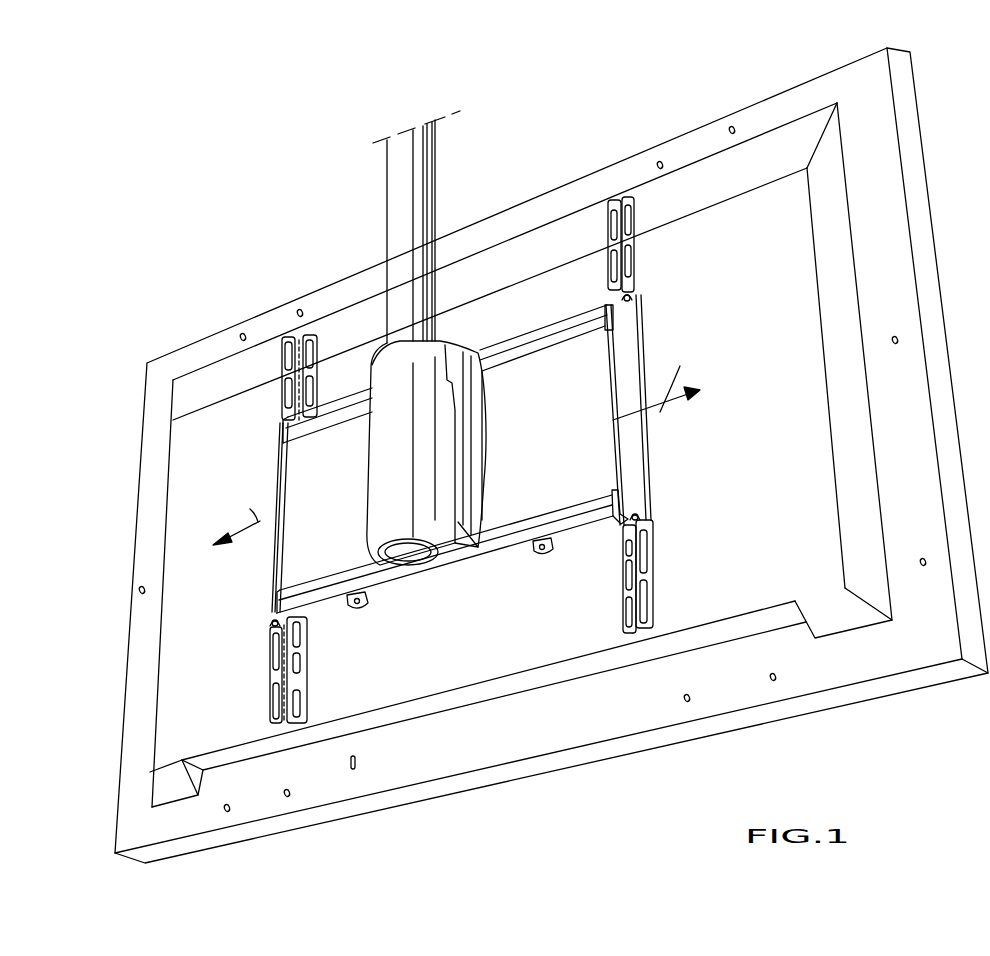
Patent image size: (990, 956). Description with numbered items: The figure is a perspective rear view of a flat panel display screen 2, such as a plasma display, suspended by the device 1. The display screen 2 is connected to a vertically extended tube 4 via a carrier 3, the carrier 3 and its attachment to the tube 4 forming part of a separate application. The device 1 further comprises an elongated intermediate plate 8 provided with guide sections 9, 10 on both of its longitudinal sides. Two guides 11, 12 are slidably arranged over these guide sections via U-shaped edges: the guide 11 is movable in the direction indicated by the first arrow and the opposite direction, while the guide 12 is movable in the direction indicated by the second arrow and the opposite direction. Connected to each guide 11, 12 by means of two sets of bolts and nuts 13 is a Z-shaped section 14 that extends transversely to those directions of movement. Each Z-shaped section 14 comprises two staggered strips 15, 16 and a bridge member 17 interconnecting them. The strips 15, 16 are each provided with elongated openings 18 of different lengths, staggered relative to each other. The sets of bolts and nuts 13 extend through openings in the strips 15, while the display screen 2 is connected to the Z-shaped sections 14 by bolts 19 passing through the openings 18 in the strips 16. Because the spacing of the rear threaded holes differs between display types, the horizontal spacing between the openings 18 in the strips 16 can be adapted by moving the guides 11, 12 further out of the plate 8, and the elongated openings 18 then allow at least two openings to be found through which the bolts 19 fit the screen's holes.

The device 1 is at (266, 229).
The flat panel display screen 2 is at (197, 383).
The carrier 3 is at (468, 400).
The vertically extended tube 4 is at (417, 170).
The elongated intermediate plate 8 is at (548, 378).
The guide section 9 is at (606, 306).
The guide section 10 is at (610, 523).
The guide 11 is at (628, 442).
The guide 12 is at (273, 603).
The sets of bolts and nuts 13 is at (272, 624).
The Z-shaped section 14 is at (272, 678).
The strip 15 is at (280, 380).
The strip 16 is at (318, 350).
The bridge member 17 is at (300, 689).
The elongated openings 18 is at (278, 654).
The bolts 19 is at (300, 633).